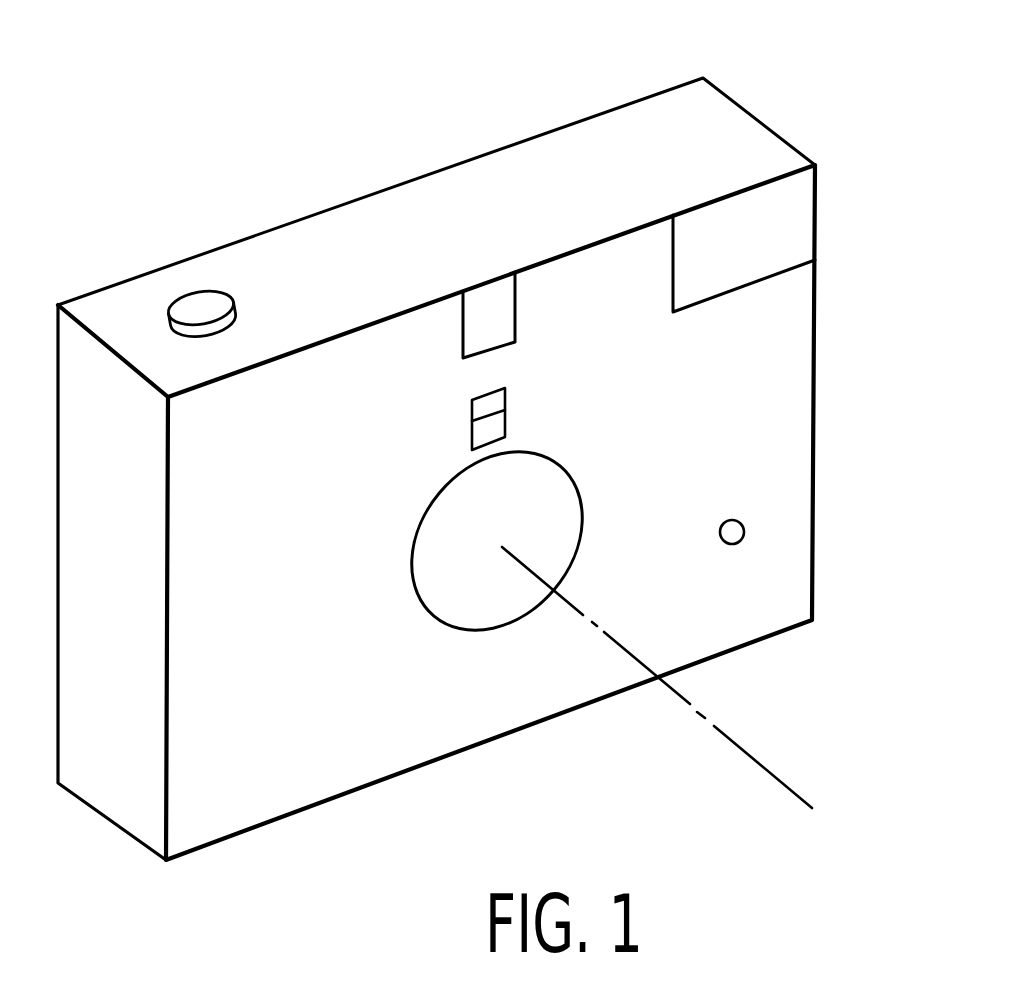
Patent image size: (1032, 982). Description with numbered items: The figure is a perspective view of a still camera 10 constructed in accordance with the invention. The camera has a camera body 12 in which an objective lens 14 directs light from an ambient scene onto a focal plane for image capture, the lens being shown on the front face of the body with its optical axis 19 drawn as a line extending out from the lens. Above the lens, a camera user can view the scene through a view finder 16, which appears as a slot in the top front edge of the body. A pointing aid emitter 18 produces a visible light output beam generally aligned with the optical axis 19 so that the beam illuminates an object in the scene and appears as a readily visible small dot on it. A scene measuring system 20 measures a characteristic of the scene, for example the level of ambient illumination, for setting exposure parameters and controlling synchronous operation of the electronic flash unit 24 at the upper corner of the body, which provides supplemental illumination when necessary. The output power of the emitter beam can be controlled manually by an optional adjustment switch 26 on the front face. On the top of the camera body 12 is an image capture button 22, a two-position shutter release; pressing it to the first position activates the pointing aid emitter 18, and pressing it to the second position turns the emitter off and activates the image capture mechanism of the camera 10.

The still camera 10 is at (280, 143).
The camera body 12 is at (570, 142).
The objective lens 14 is at (463, 632).
The view finder 16 is at (485, 300).
The pointing aid emitter 18 is at (472, 412).
The optical axis 19 is at (742, 750).
The scene measuring system 20 is at (505, 425).
The image capture button 22 is at (188, 305).
The electronic flash unit 24 is at (792, 238).
The adjustment switch 26 is at (745, 520).